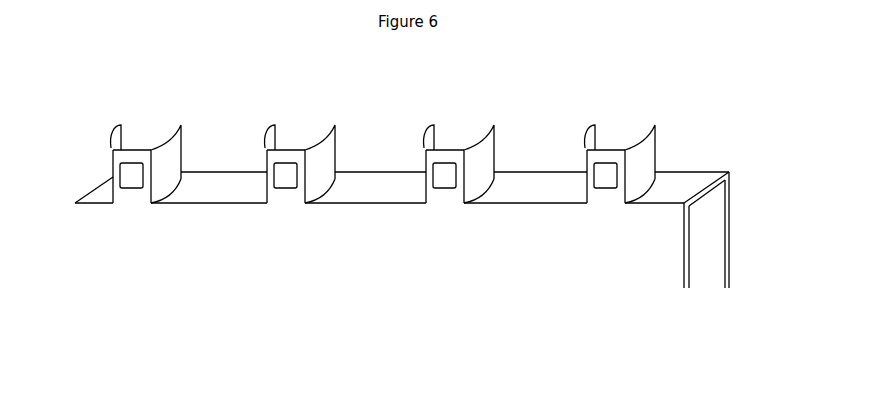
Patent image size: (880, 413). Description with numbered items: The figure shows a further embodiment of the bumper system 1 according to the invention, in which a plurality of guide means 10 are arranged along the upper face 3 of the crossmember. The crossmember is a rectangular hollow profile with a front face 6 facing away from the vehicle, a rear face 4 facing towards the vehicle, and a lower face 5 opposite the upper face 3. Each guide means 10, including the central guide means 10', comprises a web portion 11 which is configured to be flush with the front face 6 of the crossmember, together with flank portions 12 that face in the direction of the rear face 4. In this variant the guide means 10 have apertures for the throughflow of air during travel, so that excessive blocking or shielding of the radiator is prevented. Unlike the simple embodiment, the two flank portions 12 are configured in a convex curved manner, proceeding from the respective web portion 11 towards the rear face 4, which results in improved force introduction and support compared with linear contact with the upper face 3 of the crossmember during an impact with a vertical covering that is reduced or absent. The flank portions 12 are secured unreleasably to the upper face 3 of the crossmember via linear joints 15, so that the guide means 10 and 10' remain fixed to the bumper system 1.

The bumper system 1 is at (121, 306).
The upper face 3 is at (100, 190).
The rear face 4 is at (730, 220).
The lower face 5 is at (703, 271).
The front face 6 is at (445, 264).
The guide means 10 is at (137, 122).
The central guide means 10' is at (459, 133).
The web portion 11 is at (287, 195).
The flank portion 12 is at (175, 149).
The linear joint 15 is at (488, 188).